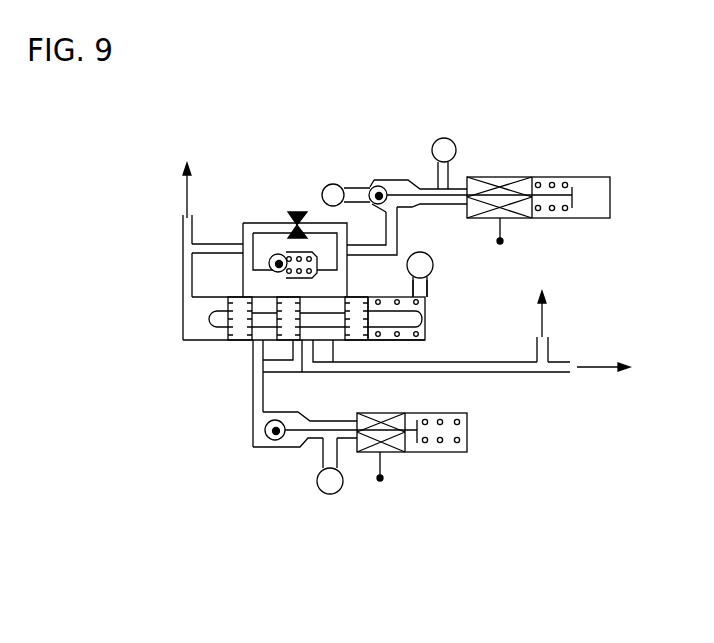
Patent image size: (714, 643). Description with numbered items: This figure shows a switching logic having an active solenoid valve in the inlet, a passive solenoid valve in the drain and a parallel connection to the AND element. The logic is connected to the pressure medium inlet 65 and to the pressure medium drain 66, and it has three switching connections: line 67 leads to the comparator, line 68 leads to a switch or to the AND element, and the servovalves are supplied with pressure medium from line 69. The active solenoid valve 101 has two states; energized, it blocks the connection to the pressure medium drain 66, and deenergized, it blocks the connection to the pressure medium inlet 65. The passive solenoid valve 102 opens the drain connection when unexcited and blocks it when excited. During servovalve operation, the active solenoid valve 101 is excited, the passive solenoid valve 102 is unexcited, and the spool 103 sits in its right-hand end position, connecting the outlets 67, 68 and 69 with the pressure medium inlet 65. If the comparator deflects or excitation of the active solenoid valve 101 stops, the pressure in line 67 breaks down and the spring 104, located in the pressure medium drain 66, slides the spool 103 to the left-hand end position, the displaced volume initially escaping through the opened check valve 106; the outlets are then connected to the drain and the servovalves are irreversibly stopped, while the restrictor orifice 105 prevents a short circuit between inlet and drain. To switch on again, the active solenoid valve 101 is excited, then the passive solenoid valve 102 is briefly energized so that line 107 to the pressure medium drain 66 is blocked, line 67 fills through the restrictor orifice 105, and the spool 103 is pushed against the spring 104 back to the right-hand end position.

The pressure medium inlet 65 is at (447, 146).
The pressure medium drain 66 is at (335, 188).
The line to the comparator 67 is at (188, 196).
The line to the switch or AND element 68 is at (545, 325).
The servovalve supply line 69 is at (594, 370).
The active solenoid valve 101 is at (379, 187).
The passive solenoid valve 102 is at (265, 431).
The spool 103 is at (403, 315).
The spring 104 is at (427, 300).
The restrictor orifice 105 is at (298, 210).
The check valve 106 is at (276, 256).
The line to pressure medium drain 107 is at (258, 390).